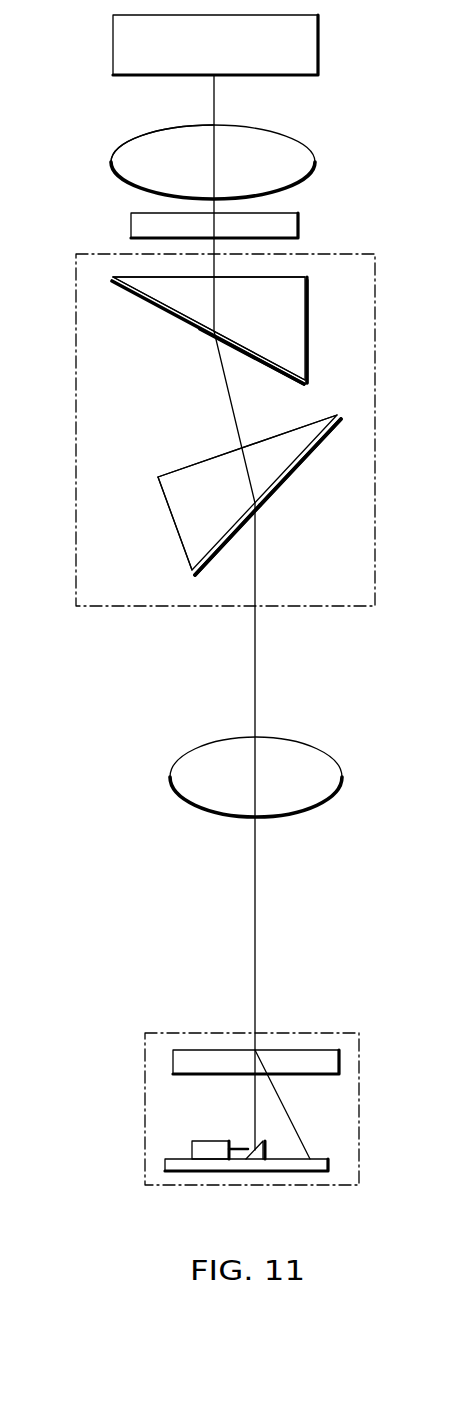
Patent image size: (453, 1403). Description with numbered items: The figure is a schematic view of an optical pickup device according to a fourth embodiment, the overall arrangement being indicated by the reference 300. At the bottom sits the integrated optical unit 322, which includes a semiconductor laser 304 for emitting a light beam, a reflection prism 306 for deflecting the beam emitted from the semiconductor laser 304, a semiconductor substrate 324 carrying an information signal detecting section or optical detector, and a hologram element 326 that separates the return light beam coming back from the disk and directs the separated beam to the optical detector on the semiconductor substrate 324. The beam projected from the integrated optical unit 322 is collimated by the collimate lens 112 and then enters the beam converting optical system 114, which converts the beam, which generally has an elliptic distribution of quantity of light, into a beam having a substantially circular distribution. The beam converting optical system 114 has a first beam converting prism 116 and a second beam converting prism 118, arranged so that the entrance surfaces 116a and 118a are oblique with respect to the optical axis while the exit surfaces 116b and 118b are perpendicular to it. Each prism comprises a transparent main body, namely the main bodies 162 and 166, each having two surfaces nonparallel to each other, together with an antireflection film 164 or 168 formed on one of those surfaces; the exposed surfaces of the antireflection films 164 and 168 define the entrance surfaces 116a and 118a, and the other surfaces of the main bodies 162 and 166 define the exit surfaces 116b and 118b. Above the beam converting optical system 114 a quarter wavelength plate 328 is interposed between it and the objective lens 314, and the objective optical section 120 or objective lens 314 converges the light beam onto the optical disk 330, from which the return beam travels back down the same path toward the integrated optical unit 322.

The optical disk 330 is at (318, 50).
The objective optical section 120 is at (322, 152).
The objective lens 314 is at (113, 157).
The ¼ wavelength plate 328 is at (131, 222).
The optical system 300 is at (62, 255).
The beam converting optical system 114 is at (75, 427).
The second beam converting prism 118 is at (318, 338).
The entrance surface 118a is at (142, 298).
The exit surface 118b is at (293, 276).
The transparent main body 166 is at (293, 353).
The antireflection film 168 is at (278, 362).
The first beam converting prism 116 is at (162, 540).
The entrance surface 116a is at (292, 478).
The exit surface 116b is at (170, 473).
The transparent main body 162 is at (172, 505).
The antireflection film 164 is at (223, 543).
The collimate lens 112 is at (170, 777).
The integrated optical unit 322 is at (145, 1080).
The hologram element 326 is at (208, 1050).
The semiconductor substrate 324 is at (328, 1166).
The semiconductor laser 304 is at (206, 1141).
The reflection prism 306 is at (265, 1160).